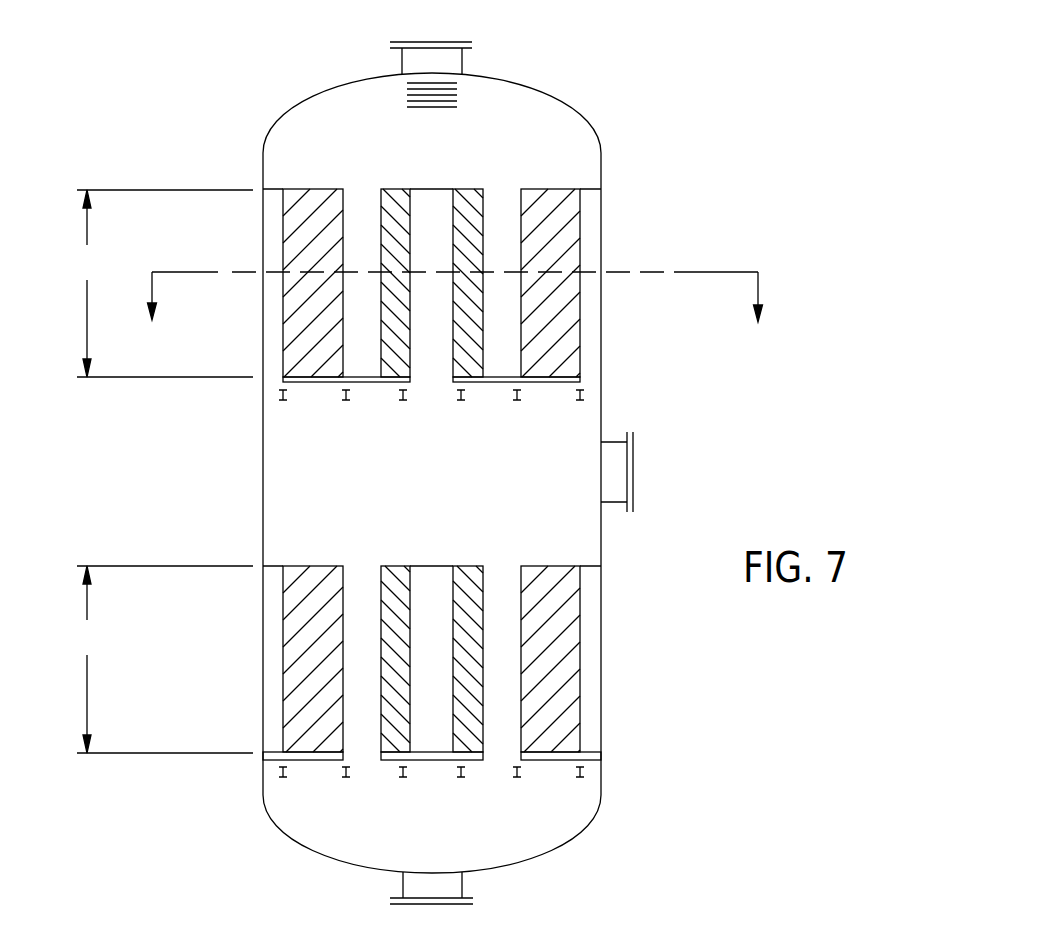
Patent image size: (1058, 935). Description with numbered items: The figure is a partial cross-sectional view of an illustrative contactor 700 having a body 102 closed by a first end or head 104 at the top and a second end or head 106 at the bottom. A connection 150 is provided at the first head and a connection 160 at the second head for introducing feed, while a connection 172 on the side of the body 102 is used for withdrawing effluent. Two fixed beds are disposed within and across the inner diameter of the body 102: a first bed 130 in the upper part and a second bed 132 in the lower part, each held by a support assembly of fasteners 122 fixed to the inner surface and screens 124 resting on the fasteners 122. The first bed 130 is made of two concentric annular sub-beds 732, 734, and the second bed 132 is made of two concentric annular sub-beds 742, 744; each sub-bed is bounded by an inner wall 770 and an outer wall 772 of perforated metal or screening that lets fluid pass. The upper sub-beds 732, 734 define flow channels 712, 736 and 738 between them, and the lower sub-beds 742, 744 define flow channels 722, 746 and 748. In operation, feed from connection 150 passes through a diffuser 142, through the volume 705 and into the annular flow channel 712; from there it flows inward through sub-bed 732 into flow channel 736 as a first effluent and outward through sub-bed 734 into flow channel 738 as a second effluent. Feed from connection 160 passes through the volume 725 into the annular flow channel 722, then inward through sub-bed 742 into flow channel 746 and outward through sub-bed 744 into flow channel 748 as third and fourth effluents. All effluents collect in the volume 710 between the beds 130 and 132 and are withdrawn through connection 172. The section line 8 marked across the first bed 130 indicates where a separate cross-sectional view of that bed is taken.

The contactor 700 is at (506, 441).
The connection 150 is at (467, 40).
The diffuser 142 is at (417, 93).
The first end or head 104 is at (601, 153).
The body 102 is at (601, 207).
The second end or head 106 is at (567, 845).
The connection 160 is at (453, 905).
The connection 172 is at (633, 468).
The volume 705 is at (303, 122).
The volume 710 is at (290, 462).
The volume 725 is at (307, 813).
The flow channel 712 is at (360, 210).
The sub-bed 734 is at (308, 200).
The sub-bed 732 is at (465, 200).
The outer wall 772 is at (560, 242).
The inner wall 770 is at (523, 337).
The flow channel 736 is at (437, 333).
The flow channel 738 is at (277, 304).
The flow channel 748 is at (272, 592).
The flow channel 746 is at (437, 607).
The sub-bed 742 is at (393, 737).
The sub-bed 744 is at (557, 732).
The flow channel 722 is at (360, 732).
The screen 124 is at (593, 380).
The fastener 122 is at (585, 394).
The first bed 130 is at (163, 283).
The second bed 132 is at (163, 659).
The line 8- 8 is at (455, 313).